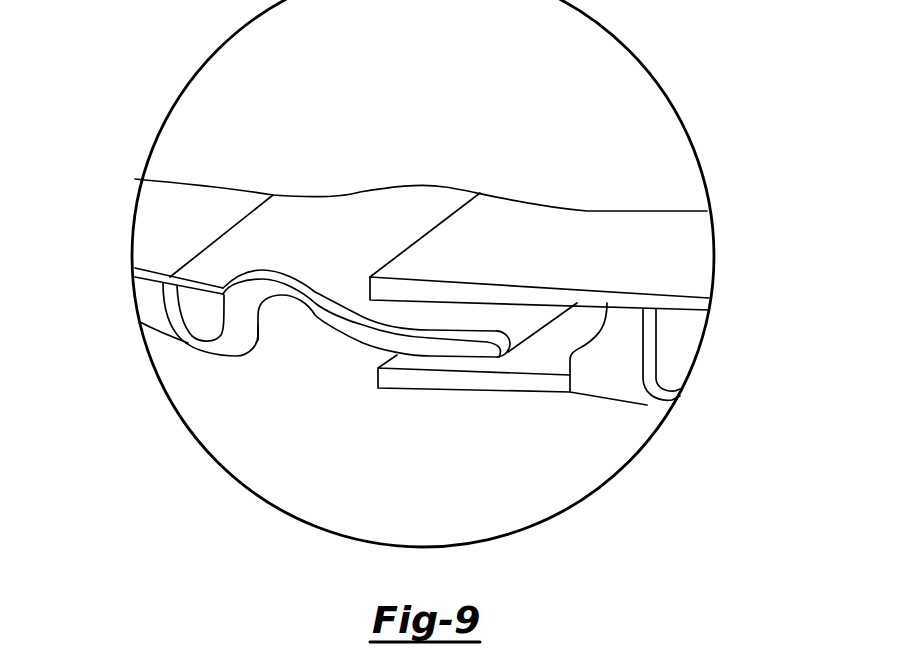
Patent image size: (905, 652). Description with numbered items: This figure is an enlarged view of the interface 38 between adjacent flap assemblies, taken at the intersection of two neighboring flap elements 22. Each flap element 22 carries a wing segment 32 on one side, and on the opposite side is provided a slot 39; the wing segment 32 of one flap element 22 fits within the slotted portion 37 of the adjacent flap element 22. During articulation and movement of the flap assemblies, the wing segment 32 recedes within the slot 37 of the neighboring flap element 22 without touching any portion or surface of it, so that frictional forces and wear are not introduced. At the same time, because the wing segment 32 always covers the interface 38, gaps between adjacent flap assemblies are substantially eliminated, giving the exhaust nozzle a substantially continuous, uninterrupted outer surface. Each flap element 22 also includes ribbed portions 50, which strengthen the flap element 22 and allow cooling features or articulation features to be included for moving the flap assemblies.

The flap element 22 is at (162, 222).
The wing segment 32 is at (337, 323).
The slot 37 is at (516, 346).
The interface 38 is at (387, 231).
The slot 39 is at (383, 266).
The ribbed portion 50 is at (647, 404).